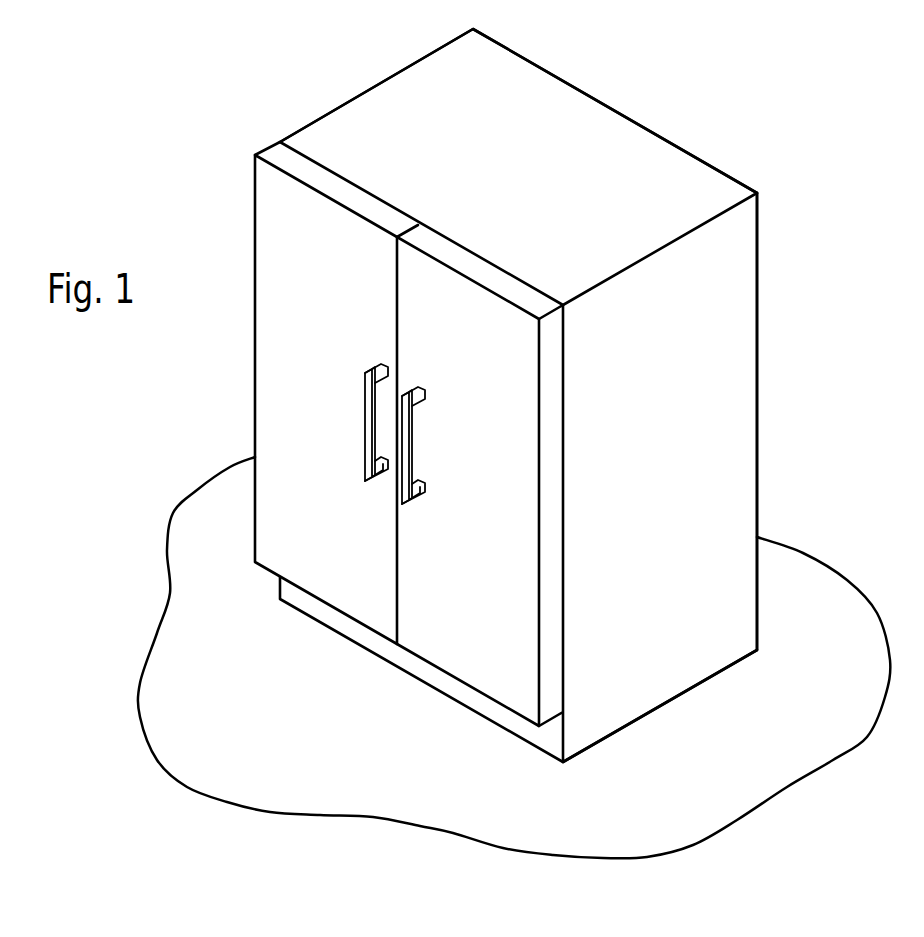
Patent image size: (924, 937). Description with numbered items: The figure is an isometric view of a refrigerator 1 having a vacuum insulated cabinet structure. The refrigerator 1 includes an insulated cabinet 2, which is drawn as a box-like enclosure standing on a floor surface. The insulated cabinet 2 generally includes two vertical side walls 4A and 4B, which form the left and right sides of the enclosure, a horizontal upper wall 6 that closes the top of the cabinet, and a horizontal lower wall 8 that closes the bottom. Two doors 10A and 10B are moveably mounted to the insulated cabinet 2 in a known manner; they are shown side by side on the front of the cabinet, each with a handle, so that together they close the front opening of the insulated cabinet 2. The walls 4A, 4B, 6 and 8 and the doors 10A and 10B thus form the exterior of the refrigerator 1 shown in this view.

The refrigerator 1 is at (670, 140).
The insulated cabinet 2 is at (757, 317).
The vertical side wall 4A is at (358, 93).
The vertical side wall 4B is at (703, 435).
The horizontal upper wall 6 is at (540, 88).
The horizontal lower wall 8 is at (658, 707).
The door 10A is at (280, 375).
The door 10B is at (458, 638).